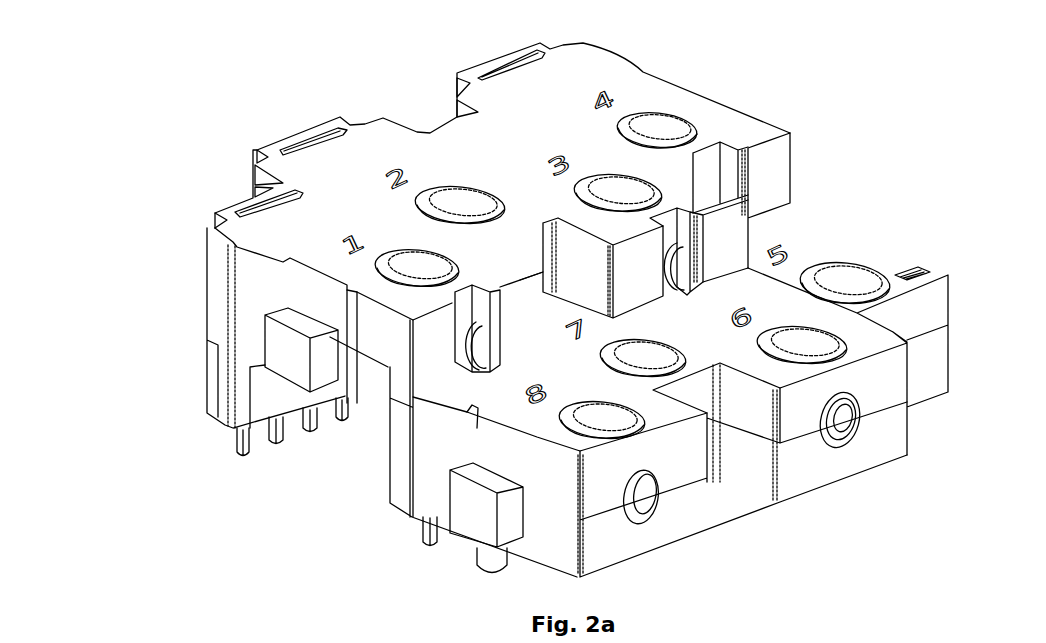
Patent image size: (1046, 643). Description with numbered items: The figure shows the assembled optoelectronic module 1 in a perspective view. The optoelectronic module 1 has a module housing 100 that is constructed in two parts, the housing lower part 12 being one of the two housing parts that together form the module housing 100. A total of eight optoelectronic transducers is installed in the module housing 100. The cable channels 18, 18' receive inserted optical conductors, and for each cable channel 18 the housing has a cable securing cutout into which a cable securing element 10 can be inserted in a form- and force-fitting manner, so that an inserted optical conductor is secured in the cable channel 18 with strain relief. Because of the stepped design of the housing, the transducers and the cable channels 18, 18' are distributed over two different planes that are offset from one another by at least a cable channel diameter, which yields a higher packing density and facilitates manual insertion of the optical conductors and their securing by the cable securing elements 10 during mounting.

The optoelectronic module 1 is at (299, 66).
The cable securing element 10 is at (656, 124).
The housing lower part 12 is at (170, 403).
The cable channel 18 is at (869, 480).
The cable channel 18' is at (785, 198).
The module housing 100 is at (172, 258).